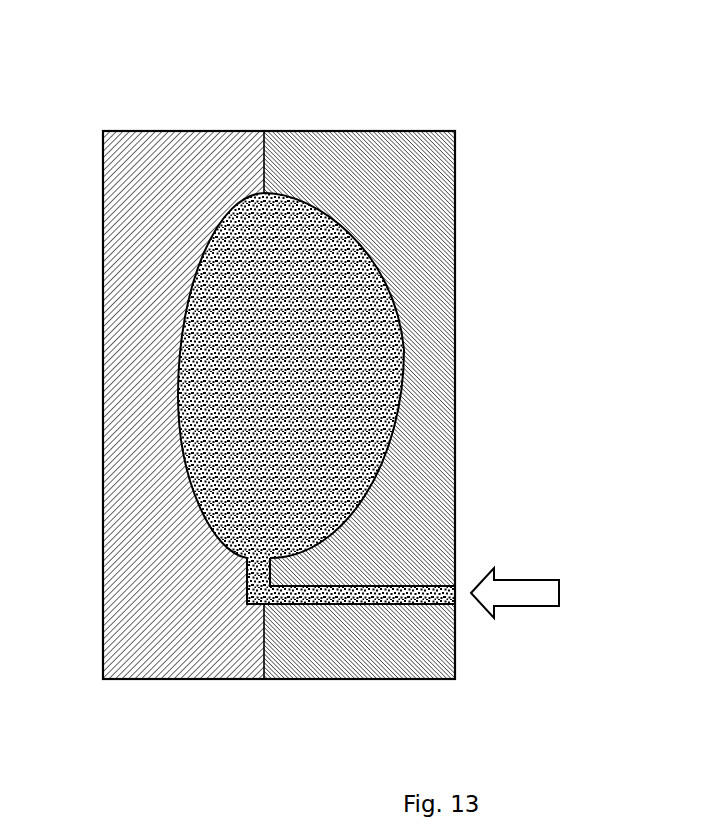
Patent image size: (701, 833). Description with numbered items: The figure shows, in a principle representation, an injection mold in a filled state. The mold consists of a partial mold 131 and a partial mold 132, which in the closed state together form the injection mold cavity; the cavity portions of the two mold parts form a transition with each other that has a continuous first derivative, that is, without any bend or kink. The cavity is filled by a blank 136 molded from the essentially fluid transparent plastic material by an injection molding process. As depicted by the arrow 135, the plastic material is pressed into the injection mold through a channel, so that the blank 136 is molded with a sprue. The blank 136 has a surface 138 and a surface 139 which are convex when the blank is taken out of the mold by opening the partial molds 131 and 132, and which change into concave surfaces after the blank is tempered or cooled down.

The partial mold 131 is at (167, 179).
The partial mold 132 is at (377, 188).
The blank 136 is at (265, 191).
The surface 138 is at (186, 319).
The surface 139 is at (402, 322).
The arrow 135 is at (538, 592).